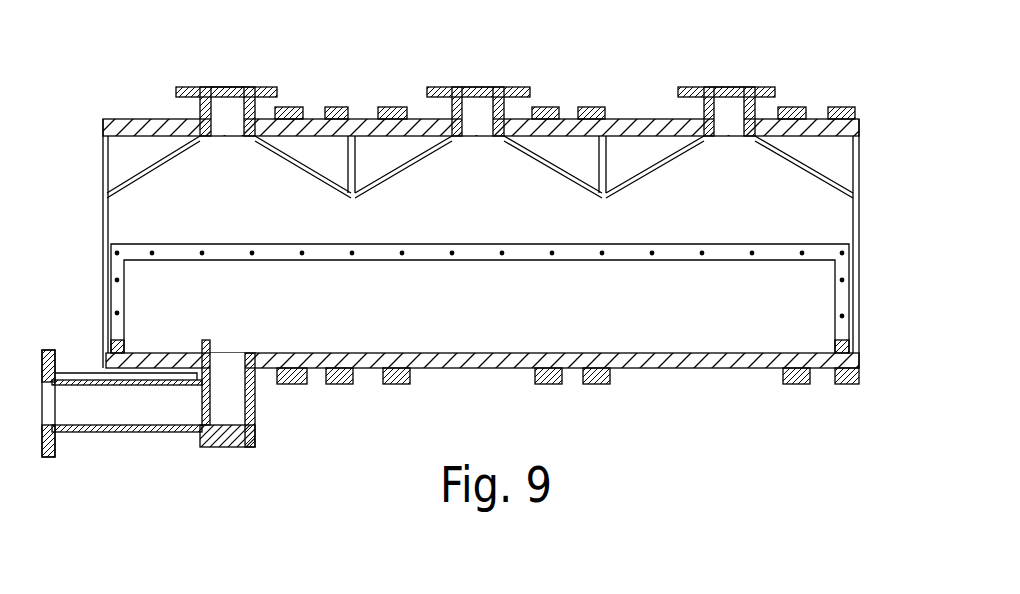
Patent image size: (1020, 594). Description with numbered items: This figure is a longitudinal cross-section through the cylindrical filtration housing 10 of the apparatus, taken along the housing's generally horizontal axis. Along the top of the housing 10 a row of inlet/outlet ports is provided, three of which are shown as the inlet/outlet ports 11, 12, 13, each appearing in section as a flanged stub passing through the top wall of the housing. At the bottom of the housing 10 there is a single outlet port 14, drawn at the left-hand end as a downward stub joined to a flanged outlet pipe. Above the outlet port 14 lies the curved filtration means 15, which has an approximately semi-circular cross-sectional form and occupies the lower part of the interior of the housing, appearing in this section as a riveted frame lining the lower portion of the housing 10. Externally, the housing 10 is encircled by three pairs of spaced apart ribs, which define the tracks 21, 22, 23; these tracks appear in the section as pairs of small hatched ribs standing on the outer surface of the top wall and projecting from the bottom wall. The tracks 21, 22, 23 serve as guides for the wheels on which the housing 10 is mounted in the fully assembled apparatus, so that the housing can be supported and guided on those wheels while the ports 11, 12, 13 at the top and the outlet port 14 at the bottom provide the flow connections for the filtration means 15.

The cylindrical filtration housing 10 is at (685, 367).
The inlet/outlet port 11 is at (230, 95).
The inlet/outlet port 12 is at (477, 95).
The inlet/outlet port 13 is at (727, 95).
The outlet port 14 is at (228, 368).
The filtration means 15 is at (852, 330).
The track 21 is at (313, 115).
The track 22 is at (567, 115).
The track 23 is at (813, 116).